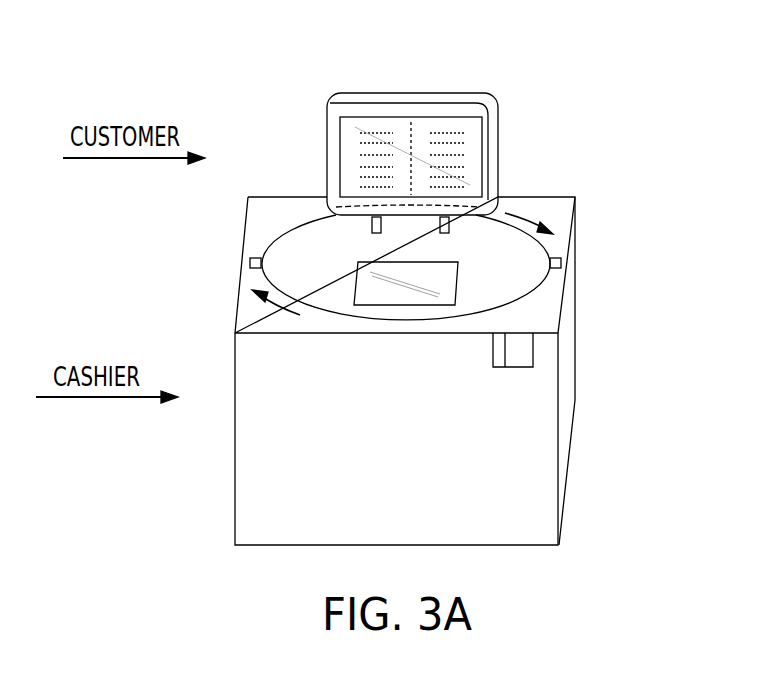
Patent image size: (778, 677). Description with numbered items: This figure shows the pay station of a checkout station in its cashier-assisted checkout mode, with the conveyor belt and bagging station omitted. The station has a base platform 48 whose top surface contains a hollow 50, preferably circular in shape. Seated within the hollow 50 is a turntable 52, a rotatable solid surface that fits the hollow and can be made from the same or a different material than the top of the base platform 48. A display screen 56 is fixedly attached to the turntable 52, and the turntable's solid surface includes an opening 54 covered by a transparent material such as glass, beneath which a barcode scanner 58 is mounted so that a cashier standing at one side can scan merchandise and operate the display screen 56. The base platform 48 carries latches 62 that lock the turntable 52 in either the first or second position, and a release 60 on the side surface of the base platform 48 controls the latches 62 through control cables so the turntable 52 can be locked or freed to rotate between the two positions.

The base platform 48 is at (575, 243).
The hollow 50 is at (552, 272).
The turntable 52 is at (475, 298).
The opening 54 is at (398, 305).
The display screen 56 is at (460, 93).
The barcode scanner 58 is at (365, 287).
The release 60 is at (517, 362).
The latches 62 is at (250, 262).